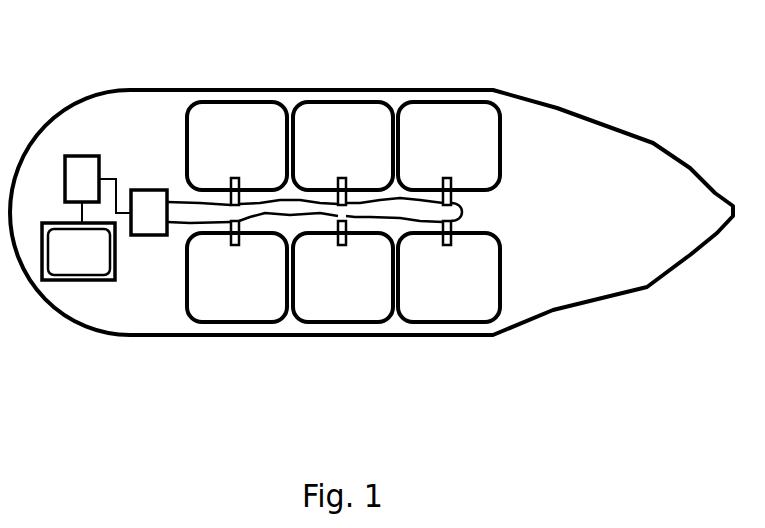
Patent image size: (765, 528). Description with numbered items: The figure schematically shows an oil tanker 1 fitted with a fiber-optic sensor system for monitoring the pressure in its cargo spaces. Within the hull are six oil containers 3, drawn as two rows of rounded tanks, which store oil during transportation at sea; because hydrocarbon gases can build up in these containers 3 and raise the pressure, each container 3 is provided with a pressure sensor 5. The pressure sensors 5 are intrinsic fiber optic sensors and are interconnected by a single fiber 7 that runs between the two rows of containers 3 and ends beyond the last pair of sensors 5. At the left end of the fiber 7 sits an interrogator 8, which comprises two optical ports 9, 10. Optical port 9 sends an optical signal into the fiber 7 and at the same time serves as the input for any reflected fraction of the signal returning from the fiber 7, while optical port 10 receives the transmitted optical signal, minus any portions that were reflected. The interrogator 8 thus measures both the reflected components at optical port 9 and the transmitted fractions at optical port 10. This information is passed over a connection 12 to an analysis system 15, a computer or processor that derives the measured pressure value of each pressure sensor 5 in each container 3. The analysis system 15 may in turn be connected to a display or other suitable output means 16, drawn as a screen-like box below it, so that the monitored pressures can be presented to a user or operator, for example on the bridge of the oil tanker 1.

The boat hull 1 is at (612, 123).
The tank 3 is at (240, 102).
The connector valve 5 is at (236, 178).
The manifold pipe end 7 is at (462, 213).
The distribution unit 8 is at (142, 235).
The upper line of manifold 9 is at (181, 199).
The lower line of manifold 10 is at (177, 225).
The connection line 12 is at (105, 179).
The control unit 15 is at (80, 156).
The display unit 16 is at (82, 280).